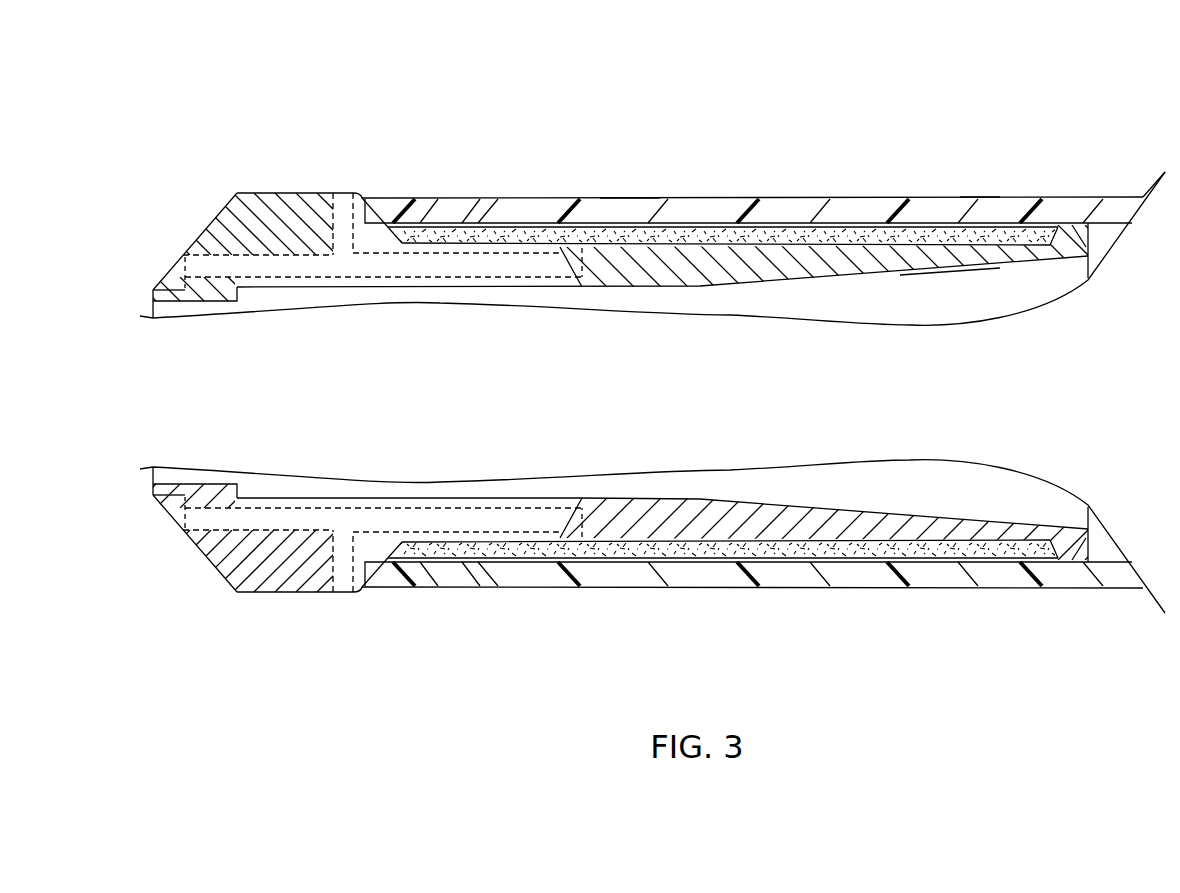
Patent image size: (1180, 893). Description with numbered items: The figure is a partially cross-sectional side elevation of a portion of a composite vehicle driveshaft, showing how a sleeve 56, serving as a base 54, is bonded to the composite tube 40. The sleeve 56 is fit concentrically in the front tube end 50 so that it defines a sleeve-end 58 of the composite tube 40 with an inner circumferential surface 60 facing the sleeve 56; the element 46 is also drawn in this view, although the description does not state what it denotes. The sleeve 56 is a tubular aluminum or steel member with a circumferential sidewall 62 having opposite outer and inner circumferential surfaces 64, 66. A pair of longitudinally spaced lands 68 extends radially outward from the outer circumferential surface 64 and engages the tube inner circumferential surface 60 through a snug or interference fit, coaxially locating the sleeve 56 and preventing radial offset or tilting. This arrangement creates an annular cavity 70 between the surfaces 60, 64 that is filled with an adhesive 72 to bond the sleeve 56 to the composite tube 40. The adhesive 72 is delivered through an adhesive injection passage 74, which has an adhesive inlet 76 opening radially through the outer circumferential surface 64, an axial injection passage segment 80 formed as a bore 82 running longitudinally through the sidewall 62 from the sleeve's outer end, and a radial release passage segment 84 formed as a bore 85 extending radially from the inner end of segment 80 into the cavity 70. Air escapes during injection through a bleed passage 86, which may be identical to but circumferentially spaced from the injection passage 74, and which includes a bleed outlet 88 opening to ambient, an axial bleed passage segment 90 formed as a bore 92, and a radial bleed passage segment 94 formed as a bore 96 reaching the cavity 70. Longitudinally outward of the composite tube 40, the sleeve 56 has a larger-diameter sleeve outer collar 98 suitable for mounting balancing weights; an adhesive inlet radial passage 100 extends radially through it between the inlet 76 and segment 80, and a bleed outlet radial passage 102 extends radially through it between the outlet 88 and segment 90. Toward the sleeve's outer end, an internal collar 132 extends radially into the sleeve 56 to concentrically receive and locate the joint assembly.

The composite tube 40 is at (1113, 92).
The upper skin panel 46 is at (973, 140).
The front tube end 50 is at (623, 140).
The base 54 is at (1125, 285).
The sleeve 56 is at (172, 213).
The sleeve-end 58 is at (868, 143).
The inner circumferential surface 60 is at (933, 222).
The circumferential sidewall 62 is at (836, 292).
The outer circumferential surface 64 is at (1008, 232).
The inner circumferential surface 66 is at (953, 282).
The lands 68 is at (380, 216).
The annular cavity 70 is at (420, 216).
The adhesive 72 is at (465, 216).
The adhesive injection passage 74 is at (465, 290).
The adhesive inlet 76 is at (342, 190).
The axial injection passage segment 80 is at (305, 290).
The bore 82 is at (368, 279).
The radial release passage segment 84 is at (585, 263).
The bore 85 is at (596, 279).
The bleed passage 86 is at (458, 496).
The bleed outlet 88 is at (343, 604).
The axial bleed passage segment 90 is at (327, 496).
The bore 92 is at (393, 526).
The radial bleed passage segment 94 is at (572, 496).
The bore 96 is at (591, 529).
The sleeve outer collar 98 is at (187, 566).
The adhesive inlet radial passage 100 is at (325, 238).
The bleed outlet radial passage 102 is at (325, 572).
The internal collar 132 is at (176, 304).